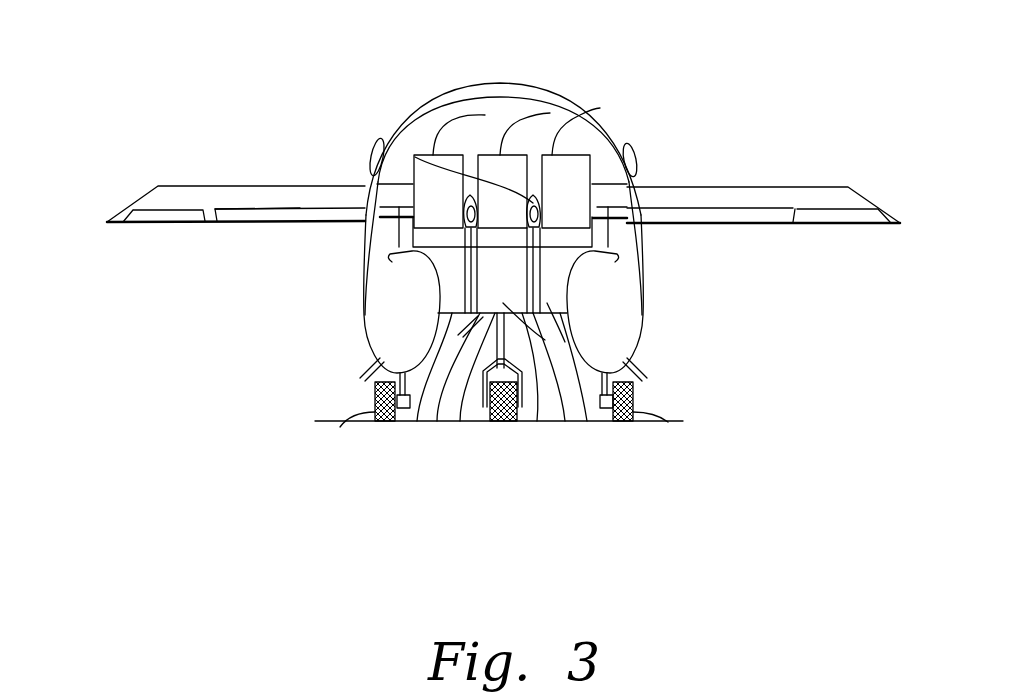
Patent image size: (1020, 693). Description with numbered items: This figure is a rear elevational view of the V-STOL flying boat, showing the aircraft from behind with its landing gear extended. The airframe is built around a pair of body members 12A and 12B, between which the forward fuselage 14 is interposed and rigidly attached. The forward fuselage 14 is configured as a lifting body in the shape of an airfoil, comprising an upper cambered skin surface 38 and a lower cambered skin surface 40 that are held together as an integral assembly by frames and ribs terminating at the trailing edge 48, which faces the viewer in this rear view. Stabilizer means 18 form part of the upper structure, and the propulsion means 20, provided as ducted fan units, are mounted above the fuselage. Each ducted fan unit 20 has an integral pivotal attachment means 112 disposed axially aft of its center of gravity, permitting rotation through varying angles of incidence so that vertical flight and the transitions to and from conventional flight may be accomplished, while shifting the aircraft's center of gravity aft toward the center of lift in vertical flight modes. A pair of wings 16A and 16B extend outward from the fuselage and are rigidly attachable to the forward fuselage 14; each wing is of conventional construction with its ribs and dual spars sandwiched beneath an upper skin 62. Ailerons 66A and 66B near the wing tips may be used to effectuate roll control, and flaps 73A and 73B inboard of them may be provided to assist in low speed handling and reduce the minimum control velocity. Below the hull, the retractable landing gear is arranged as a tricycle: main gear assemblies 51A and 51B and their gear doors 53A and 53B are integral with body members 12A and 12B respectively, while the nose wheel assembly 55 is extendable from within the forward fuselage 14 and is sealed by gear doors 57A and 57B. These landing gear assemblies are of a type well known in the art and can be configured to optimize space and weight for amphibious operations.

The body member 12A is at (645, 307).
The body member 12B is at (362, 316).
The forward fuselage 14 is at (537, 421).
The wing 16A is at (782, 187).
The wing 16B is at (222, 185).
The stabilizer means 18 is at (500, 84).
The propulsion means 20 is at (485, 115).
The upper cambered skin surface 38 is at (587, 421).
The lower cambered skin surface 40 is at (417, 421).
The trailing edge 48 is at (460, 421).
The main gear assembly 51A is at (667, 422).
The main gear assembly 51B is at (340, 430).
The gear door 53A is at (645, 385).
The gear door 53B is at (363, 373).
The nose wheel assembly 55 is at (497, 421).
The gear door 57A is at (566, 421).
The gear door 57B is at (440, 421).
The upper skin 62 is at (252, 197).
The aileron 66A is at (849, 223).
The aileron 66B is at (160, 223).
The flap 73A is at (720, 223).
The flap 73B is at (285, 223).
The pivotal attachment means 112 is at (467, 208).